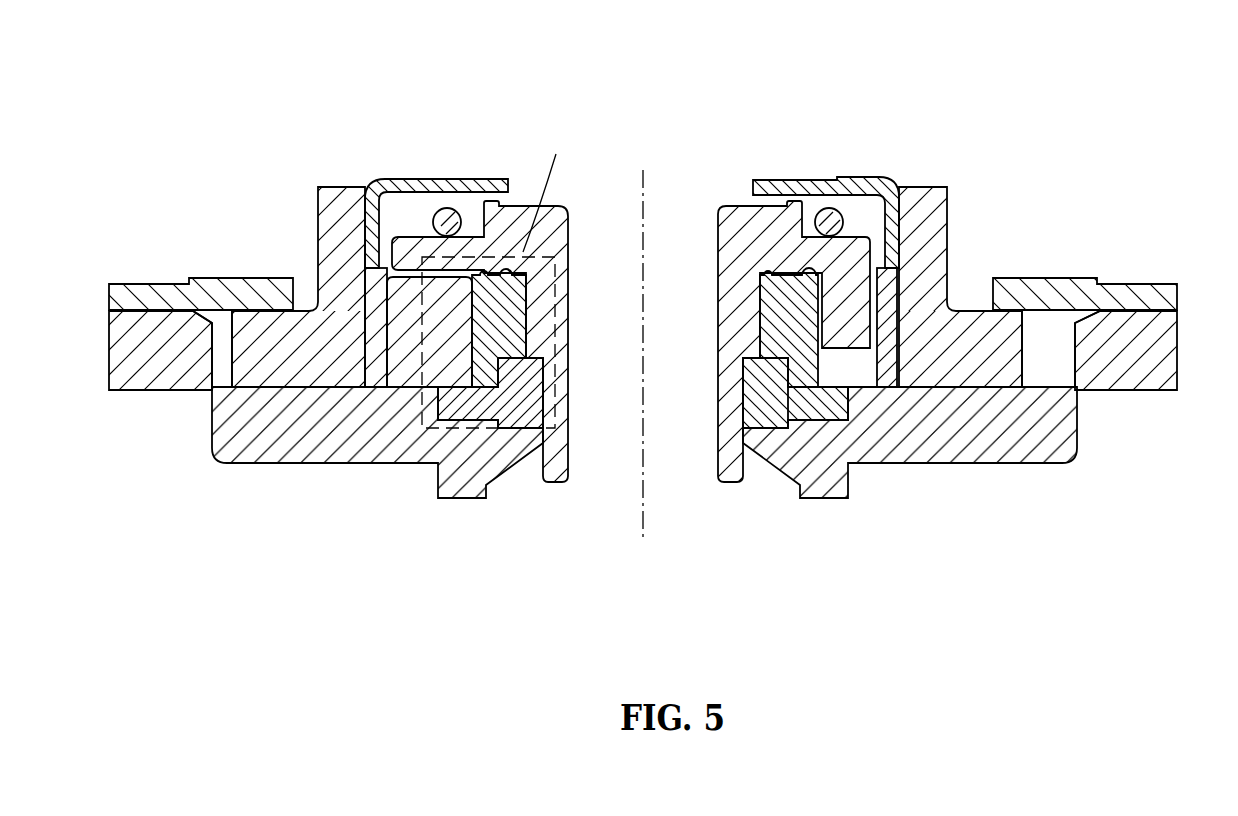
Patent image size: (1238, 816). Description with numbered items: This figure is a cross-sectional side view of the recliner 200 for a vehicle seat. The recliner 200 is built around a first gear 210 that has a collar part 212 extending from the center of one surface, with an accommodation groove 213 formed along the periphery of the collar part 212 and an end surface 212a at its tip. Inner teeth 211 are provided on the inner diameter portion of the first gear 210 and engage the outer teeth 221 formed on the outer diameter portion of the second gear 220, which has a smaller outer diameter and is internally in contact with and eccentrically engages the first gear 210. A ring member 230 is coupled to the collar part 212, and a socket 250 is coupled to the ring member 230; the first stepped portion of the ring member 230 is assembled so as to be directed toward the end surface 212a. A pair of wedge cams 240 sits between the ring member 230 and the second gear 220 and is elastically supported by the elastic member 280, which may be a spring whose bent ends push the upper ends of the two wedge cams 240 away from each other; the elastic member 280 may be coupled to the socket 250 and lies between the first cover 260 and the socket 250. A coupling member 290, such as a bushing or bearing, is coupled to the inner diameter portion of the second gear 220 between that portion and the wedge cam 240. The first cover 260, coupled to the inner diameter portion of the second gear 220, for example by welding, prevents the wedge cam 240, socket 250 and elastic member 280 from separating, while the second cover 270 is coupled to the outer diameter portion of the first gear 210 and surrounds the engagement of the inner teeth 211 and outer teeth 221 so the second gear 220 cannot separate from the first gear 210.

The recliner 200 is at (556, 94).
The first gear 210 is at (1000, 450).
The inner teeth 211 is at (1068, 350).
The collar part 212 is at (767, 393).
The end surface of the collar part 212a is at (745, 338).
The accommodation groove 213 is at (838, 407).
The second gear 220 is at (963, 317).
The outer teeth 221 is at (1026, 303).
The ring member 230 is at (750, 296).
The wedge cam 240 is at (410, 360).
The socket 250 is at (752, 228).
The first cover 260 is at (792, 185).
The second cover 270 is at (1147, 293).
The elastic member 280 is at (829, 220).
The coupling member 290 is at (375, 365).